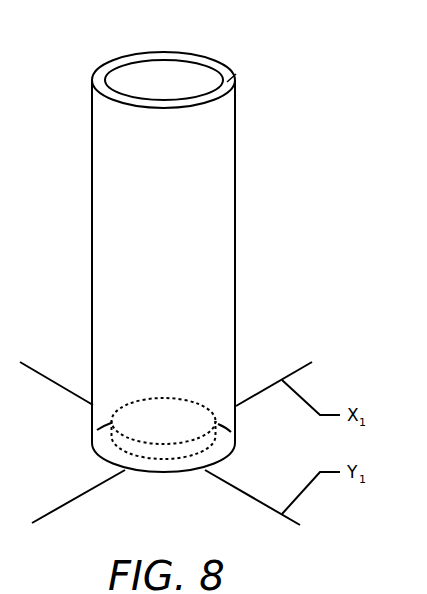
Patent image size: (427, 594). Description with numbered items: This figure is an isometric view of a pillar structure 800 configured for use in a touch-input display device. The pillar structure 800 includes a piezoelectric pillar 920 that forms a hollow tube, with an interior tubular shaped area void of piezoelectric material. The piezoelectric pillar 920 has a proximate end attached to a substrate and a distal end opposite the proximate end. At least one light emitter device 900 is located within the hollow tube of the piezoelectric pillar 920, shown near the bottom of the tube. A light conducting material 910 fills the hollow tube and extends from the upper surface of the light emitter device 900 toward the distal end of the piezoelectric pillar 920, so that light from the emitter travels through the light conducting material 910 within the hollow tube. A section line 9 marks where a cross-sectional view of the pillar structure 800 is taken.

The pillar structure 800 is at (213, 237).
The light emitter device 900 is at (222, 385).
The light conducting material 910 is at (164, 61).
The piezoelectric pillar 920 is at (265, 69).
The line 9- 9 is at (148, 115).